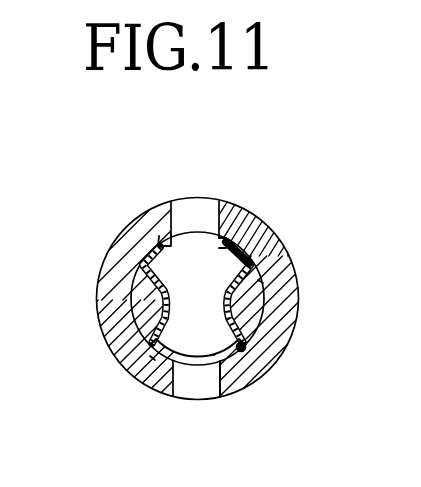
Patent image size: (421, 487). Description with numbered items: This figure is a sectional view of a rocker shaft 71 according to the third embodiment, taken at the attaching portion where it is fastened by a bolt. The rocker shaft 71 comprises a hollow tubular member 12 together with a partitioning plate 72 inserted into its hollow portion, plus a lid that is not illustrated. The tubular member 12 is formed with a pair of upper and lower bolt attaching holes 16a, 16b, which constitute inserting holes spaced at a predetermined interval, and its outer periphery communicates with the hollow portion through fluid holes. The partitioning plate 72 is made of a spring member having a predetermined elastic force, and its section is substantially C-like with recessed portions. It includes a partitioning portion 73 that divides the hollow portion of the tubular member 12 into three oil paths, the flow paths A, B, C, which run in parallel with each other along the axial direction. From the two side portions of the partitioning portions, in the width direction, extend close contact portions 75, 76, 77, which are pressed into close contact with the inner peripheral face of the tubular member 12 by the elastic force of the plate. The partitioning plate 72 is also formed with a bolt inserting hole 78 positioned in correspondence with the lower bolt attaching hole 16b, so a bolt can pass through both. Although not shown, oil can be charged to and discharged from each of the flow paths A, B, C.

The tubular member 12 is at (280, 262).
The bolt attaching hole 16a is at (198, 208).
The bolt attaching hole 16b is at (192, 388).
The rocker shaft 71 is at (108, 250).
The partitioning plate 72 is at (244, 348).
The partitioning portion 73 is at (152, 340).
The close contact portion 75 is at (160, 246).
The close contact portion 76 is at (262, 283).
The close contact portion 77 is at (228, 244).
The bolt inserting hole 78 is at (221, 397).
The flow path A is at (212, 258).
The flow path B is at (150, 300).
The flow path C is at (247, 308).